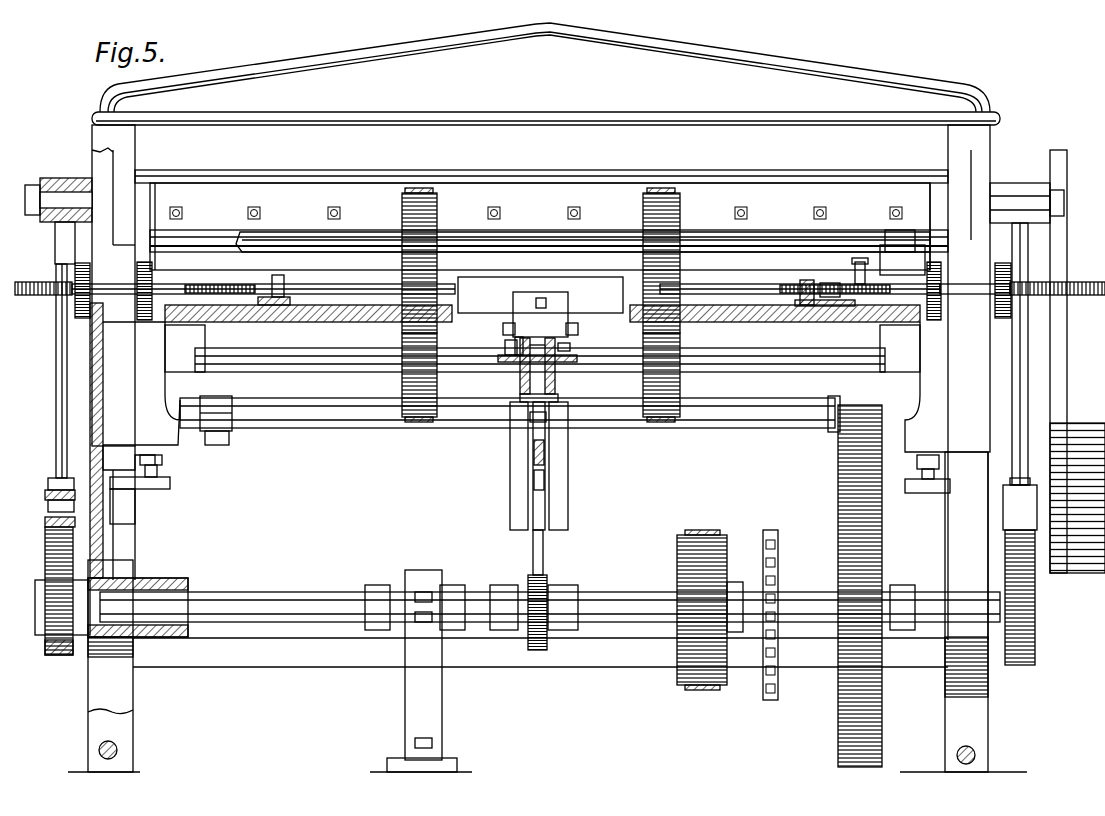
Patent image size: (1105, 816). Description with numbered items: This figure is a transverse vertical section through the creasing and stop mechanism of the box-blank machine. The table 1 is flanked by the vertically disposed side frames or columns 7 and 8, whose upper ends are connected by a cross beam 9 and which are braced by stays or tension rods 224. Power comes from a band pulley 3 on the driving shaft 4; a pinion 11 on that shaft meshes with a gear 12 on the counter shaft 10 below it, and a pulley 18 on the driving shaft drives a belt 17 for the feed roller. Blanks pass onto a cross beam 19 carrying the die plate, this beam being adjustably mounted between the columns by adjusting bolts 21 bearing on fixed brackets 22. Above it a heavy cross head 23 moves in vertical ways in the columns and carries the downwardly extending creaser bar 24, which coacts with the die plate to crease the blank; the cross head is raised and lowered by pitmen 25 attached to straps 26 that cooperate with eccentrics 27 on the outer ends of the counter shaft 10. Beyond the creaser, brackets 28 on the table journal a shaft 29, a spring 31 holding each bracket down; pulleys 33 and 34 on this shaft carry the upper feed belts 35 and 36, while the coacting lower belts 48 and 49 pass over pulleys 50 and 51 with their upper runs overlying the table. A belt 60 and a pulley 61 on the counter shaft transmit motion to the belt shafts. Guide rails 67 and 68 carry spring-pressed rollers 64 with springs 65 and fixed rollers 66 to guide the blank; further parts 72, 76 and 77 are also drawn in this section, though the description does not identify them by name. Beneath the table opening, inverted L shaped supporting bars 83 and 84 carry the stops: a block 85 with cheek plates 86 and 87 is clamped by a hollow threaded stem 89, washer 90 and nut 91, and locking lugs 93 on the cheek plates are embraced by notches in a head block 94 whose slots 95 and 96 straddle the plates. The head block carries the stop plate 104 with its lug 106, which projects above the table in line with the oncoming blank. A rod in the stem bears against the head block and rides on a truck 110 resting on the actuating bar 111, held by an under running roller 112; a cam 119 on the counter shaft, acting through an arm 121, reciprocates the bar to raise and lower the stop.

The table 1 is at (355, 322).
The band pulley 3 is at (1077, 361).
The driving shaft 4 is at (325, 428).
The side frame or column 7 is at (950, 700).
The side frame or column 8 is at (133, 692).
The cross beam 9 is at (545, 67).
The counter shaft 10 is at (620, 592).
The pinion 11 is at (840, 425).
The gear 12 is at (838, 548).
The belt 17 is at (218, 445).
The pulley 18 is at (232, 440).
The cross beam 19 is at (525, 396).
The adjusting bolts 21 is at (160, 470).
The fixed brackets 22 is at (165, 492).
The cross head 23 is at (145, 208).
The creaser bar 24 is at (205, 260).
The pitmen 25 is at (58, 362).
The straps 26 is at (45, 517).
The eccentrics 27 is at (55, 556).
The brackets 28 is at (890, 240).
The shaft 29 is at (520, 240).
The spring 31 is at (856, 284).
The pulley 33 is at (680, 208).
The pulley 34 is at (437, 205).
The belt 35 is at (662, 188).
The belt 36 is at (420, 188).
The belt 48 is at (662, 420).
The belt 49 is at (420, 420).
The pulley 50 is at (680, 384).
The pulley 51 is at (402, 382).
The belt 60 is at (705, 530).
The pulley 61 is at (690, 555).
The rollers 64 is at (795, 302).
The springs 65 is at (850, 282).
The rollers 66 is at (290, 300).
The guide bar or rail 67 is at (800, 284).
The guide bar or rail 68 is at (284, 283).
The worm shaft 72 is at (35, 296).
The worm gear 76 is at (143, 322).
The worm gear 77 is at (75, 265).
The supporting bar 83 is at (558, 385).
The supporting bar 84 is at (505, 362).
The block or casting 85 is at (540, 365).
The cheek plate 86 is at (570, 347).
The cheek plate 87 is at (515, 345).
The hollow threaded stem 89 is at (546, 418).
The washer 90 is at (558, 398).
The nut 91 is at (520, 410).
The locking lug 93 is at (505, 350).
The head block or casing 94 is at (568, 303).
The slot 95 is at (578, 326).
The slot 96 is at (497, 323).
The stop plate 104 is at (585, 283).
The lug 106 is at (535, 300).
The truck 110 is at (545, 462).
The actuating bar 111 is at (533, 458).
The under running roller 112 is at (545, 484).
The cam 119 is at (547, 578).
The arm 121 is at (543, 538).
The stays or tension rods 224 is at (118, 748).